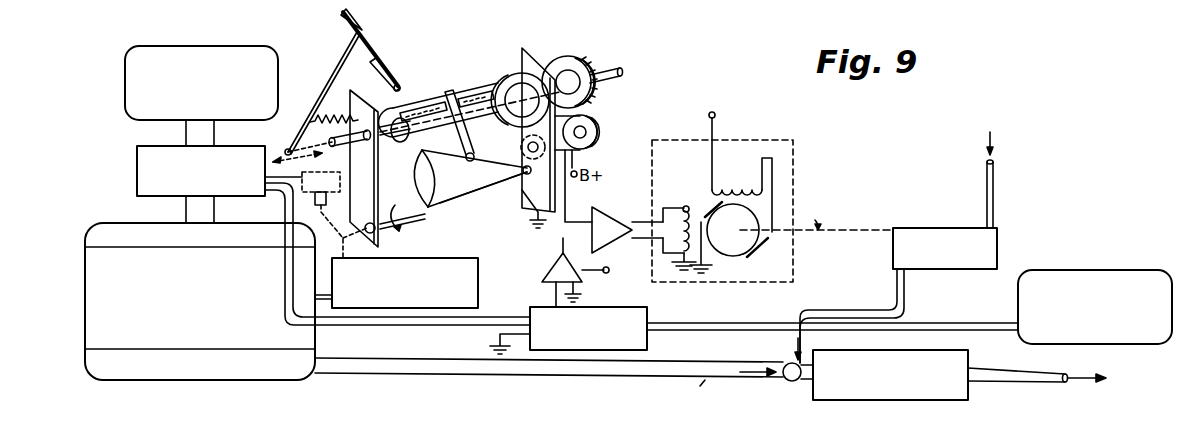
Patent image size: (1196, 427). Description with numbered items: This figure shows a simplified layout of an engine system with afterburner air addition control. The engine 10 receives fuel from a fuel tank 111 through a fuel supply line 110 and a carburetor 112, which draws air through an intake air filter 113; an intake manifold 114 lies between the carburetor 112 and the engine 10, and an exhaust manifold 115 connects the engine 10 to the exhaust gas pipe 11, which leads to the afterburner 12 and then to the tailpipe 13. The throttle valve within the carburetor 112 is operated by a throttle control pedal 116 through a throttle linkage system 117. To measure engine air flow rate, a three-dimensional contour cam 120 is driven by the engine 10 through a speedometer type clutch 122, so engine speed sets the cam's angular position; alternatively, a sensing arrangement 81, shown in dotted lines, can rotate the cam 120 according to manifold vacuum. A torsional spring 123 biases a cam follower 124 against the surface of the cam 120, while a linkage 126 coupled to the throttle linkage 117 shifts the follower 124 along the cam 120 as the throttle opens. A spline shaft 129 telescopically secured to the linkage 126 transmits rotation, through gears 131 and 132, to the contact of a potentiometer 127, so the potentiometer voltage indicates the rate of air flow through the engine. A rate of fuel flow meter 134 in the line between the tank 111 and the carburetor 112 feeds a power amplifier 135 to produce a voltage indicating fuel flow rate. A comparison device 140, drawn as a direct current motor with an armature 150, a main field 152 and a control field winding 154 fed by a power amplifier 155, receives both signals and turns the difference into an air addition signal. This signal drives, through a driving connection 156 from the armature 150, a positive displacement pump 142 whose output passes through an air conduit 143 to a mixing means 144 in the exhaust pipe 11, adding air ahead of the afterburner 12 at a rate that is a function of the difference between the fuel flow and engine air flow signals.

The engine 10 is at (85, 300).
The exhaust gas pipe 11 is at (385, 360).
The afterburner 12 is at (968, 356).
The tailpipe 13 is at (1034, 380).
The sensing arrangement 81 is at (316, 215).
The fuel supply line 110 is at (741, 326).
The fuel tank 111 is at (1123, 270).
The carburetor 112 is at (228, 146).
The intake air filter 113 is at (236, 46).
The intake manifold 114 is at (228, 223).
The exhaust manifold 115 is at (128, 380).
The throttle control pedal 116 is at (371, 42).
The throttle linkage system 117 is at (334, 72).
The three-dimensional contour cam 120 is at (480, 195).
The speedometer type clutch 122 is at (430, 258).
The torsional spring 123 is at (512, 74).
The cam follower 124 is at (484, 142).
The linkage 126 is at (392, 142).
The potentiometer 127 is at (600, 148).
The spline shaft 129 is at (478, 82).
The gear 131 is at (582, 58).
The gear 132 is at (598, 124).
The rate of fuel flow meter 134 is at (600, 307).
The power amplifier 135 is at (548, 262).
The comparison device 140 is at (750, 140).
The positive displacement pump 142 is at (997, 240).
The air conduit 143 is at (918, 292).
The mixing means 144 is at (801, 389).
The armature 150 is at (736, 256).
The main field 152 is at (730, 170).
The control field winding 154 is at (680, 200).
The power amplifier 155 is at (604, 207).
The driving connection 156 is at (830, 232).